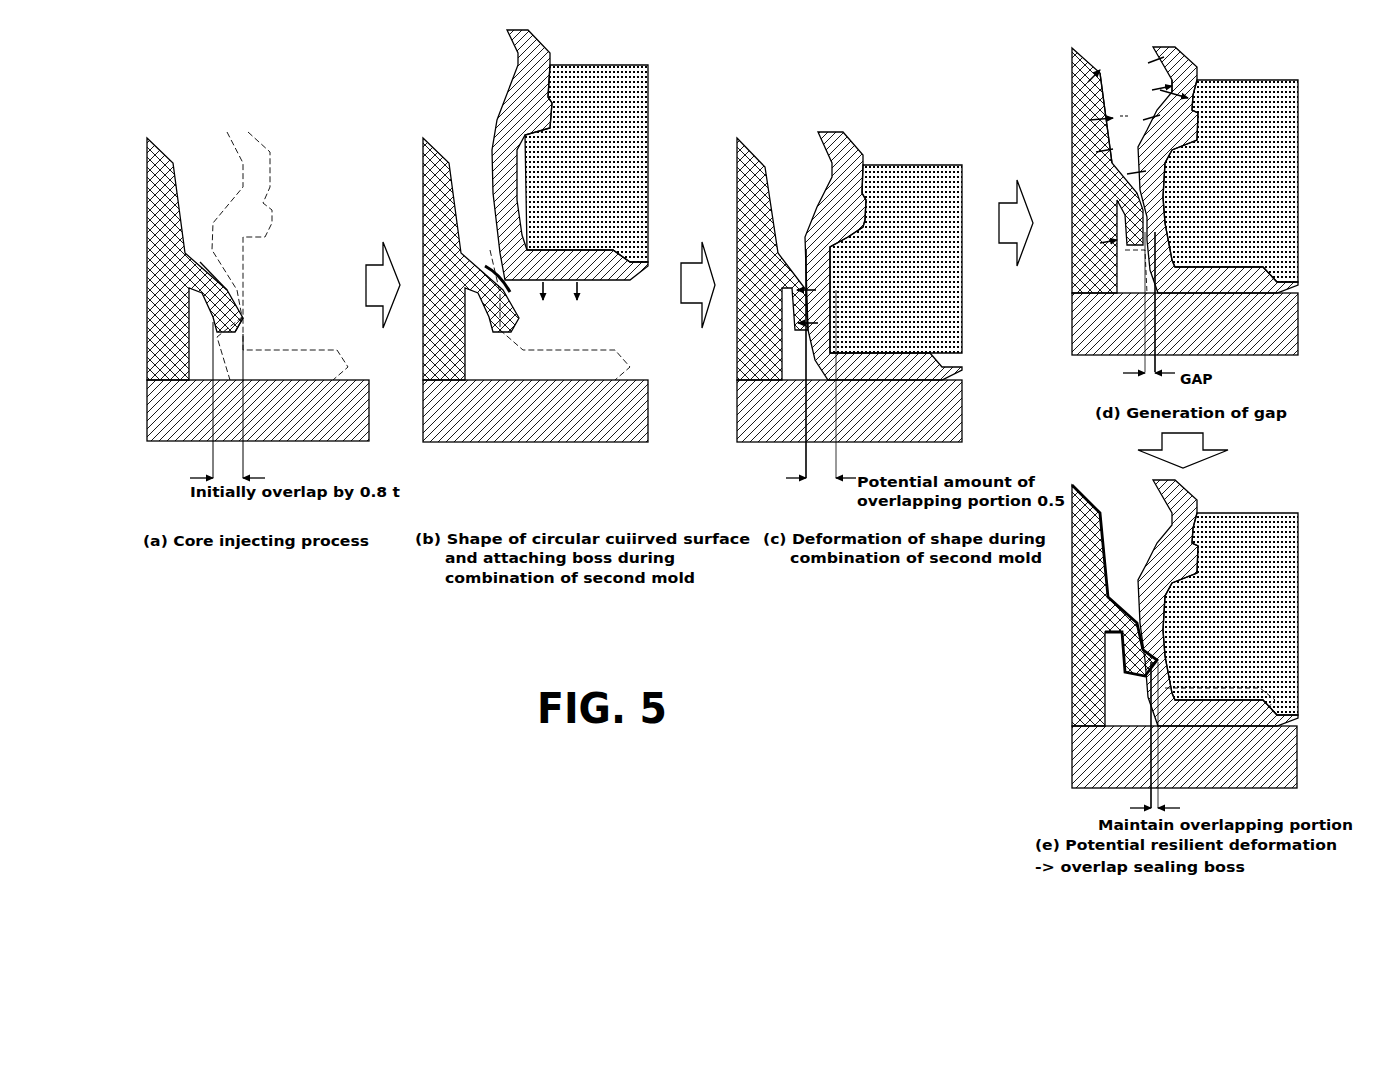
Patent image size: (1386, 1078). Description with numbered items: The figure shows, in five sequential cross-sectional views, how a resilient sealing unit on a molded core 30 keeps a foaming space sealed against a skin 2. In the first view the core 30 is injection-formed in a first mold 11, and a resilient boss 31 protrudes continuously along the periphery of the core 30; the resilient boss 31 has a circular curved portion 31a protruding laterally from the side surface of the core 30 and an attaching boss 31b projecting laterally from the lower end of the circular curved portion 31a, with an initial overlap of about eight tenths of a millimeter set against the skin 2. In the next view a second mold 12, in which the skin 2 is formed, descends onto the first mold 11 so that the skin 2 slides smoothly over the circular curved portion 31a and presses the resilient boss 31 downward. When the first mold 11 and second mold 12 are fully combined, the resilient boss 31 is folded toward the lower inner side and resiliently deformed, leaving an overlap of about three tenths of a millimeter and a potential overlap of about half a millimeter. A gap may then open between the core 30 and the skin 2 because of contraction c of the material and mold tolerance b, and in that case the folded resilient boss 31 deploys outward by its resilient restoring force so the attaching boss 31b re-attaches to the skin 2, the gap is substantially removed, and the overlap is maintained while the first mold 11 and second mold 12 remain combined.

The skin 2 is at (532, 45).
The first mold 11 is at (175, 432).
The second mold 12 is at (596, 68).
The core 30 is at (160, 146).
The resilient boss 31 is at (470, 458).
The circular curved portion 31a is at (200, 262).
The attaching boss 31b is at (243, 318).
The mold tolerance b is at (1180, 81).
The contraction c is at (1105, 110).